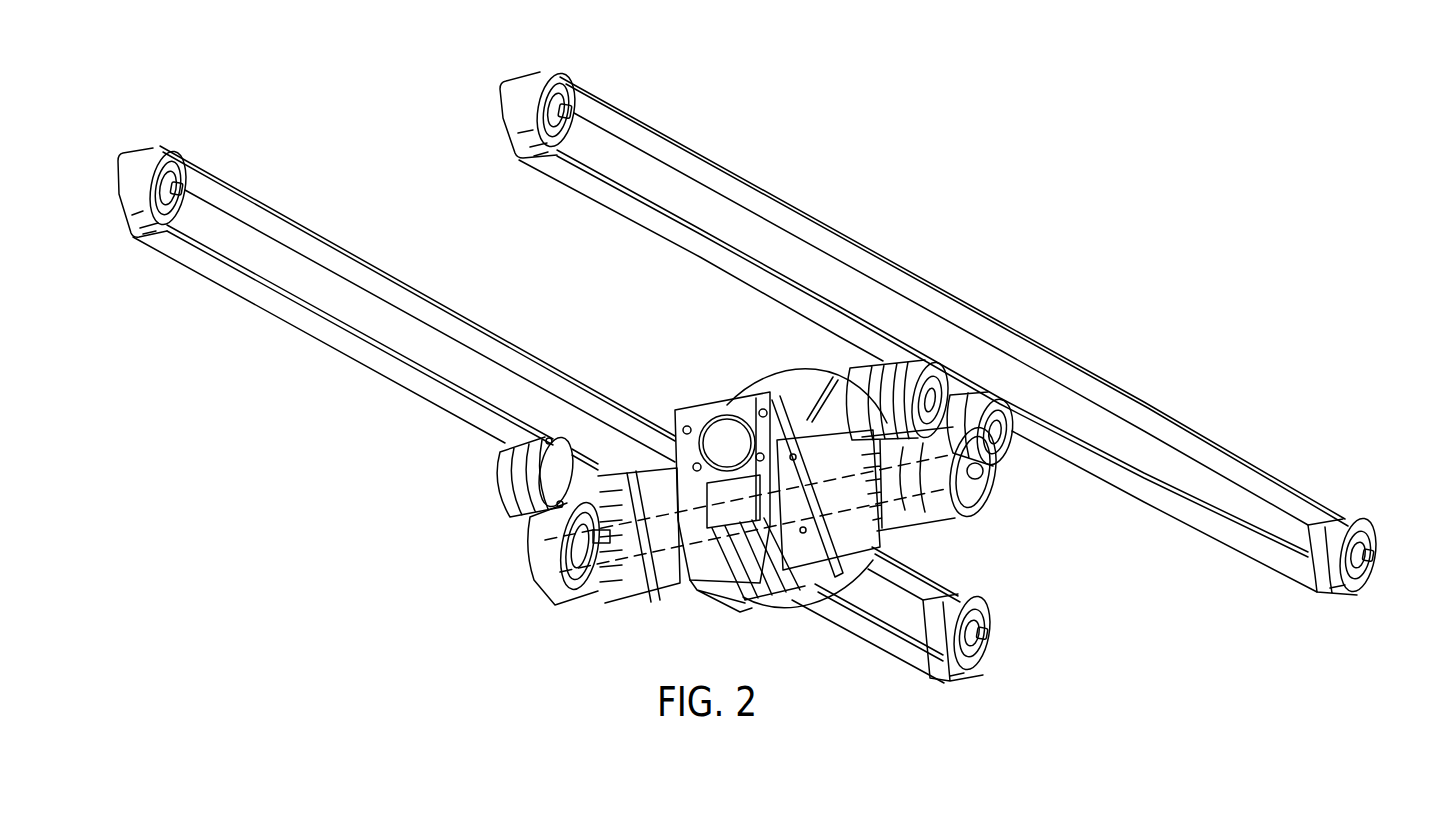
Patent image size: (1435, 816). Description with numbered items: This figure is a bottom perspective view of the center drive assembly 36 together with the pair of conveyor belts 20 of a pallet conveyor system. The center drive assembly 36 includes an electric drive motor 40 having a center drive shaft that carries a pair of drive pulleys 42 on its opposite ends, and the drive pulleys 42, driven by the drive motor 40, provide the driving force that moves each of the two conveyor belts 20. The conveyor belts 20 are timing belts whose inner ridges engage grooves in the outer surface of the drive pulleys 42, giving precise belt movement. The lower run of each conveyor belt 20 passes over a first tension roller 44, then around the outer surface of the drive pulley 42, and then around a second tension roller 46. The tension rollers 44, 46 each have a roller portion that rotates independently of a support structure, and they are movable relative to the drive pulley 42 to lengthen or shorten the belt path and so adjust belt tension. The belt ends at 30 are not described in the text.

The conveyor belt 20 is at (327, 260).
The end roller 30 is at (165, 155).
The center drive assembly 36 is at (743, 496).
The electric drive motor 40 is at (703, 412).
The drive pulley 42 is at (533, 573).
The first tension roller 44 is at (857, 365).
The second tension roller 46 is at (1000, 403).